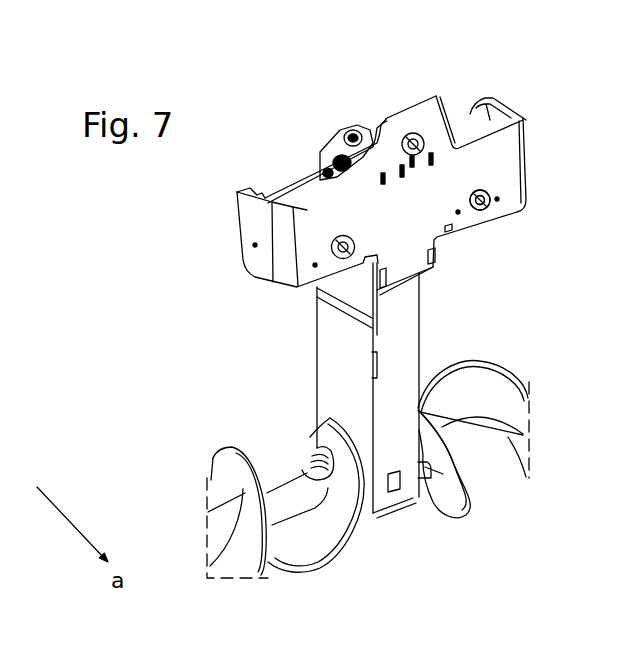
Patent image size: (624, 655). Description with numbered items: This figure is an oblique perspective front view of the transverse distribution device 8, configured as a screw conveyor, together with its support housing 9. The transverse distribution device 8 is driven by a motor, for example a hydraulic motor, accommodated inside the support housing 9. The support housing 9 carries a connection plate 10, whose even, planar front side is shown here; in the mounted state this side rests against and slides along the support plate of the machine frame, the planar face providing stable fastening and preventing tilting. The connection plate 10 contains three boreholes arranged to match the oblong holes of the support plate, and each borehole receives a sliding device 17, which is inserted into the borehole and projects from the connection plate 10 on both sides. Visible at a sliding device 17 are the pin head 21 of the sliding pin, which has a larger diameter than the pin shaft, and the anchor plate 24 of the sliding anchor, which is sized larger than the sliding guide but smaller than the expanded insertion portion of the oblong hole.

The transverse distribution device 8 is at (307, 548).
The support housing 9 is at (340, 357).
The connection plate 10 is at (435, 108).
The sliding device 17 is at (337, 229).
The pin head 21 is at (488, 208).
The anchor plate 24 is at (472, 213).